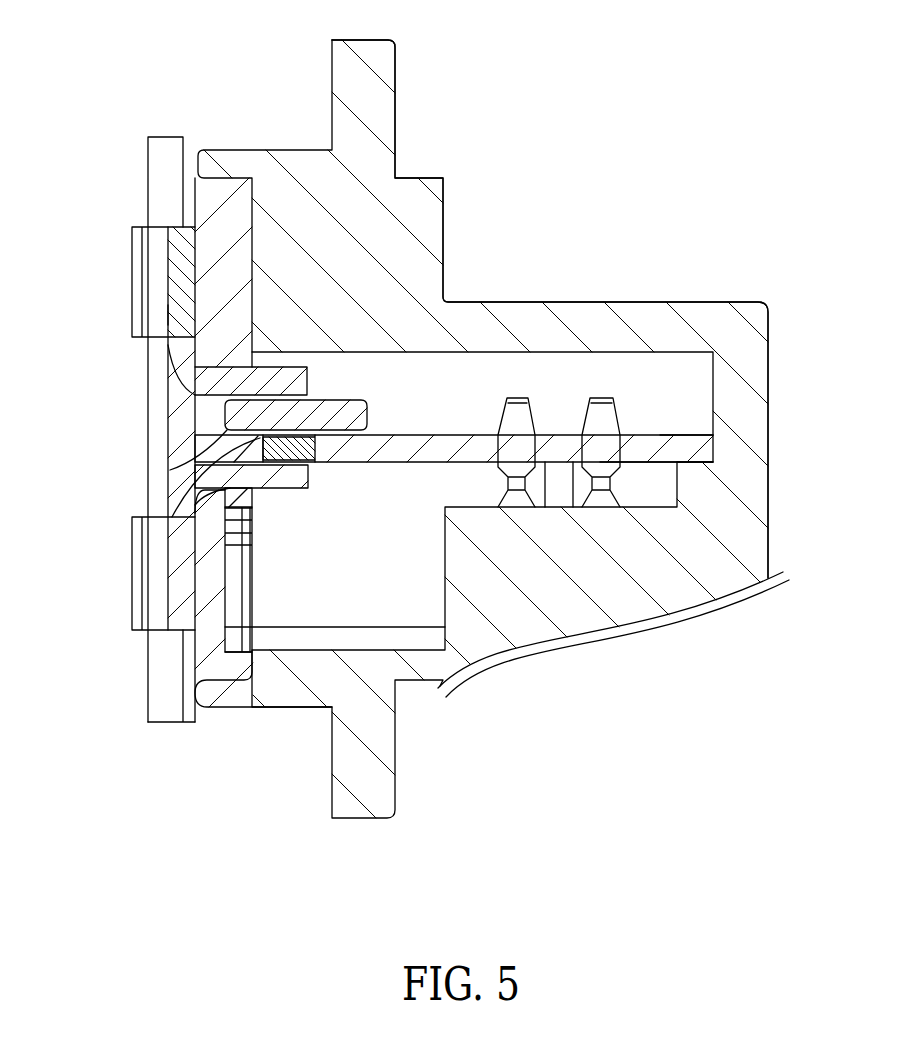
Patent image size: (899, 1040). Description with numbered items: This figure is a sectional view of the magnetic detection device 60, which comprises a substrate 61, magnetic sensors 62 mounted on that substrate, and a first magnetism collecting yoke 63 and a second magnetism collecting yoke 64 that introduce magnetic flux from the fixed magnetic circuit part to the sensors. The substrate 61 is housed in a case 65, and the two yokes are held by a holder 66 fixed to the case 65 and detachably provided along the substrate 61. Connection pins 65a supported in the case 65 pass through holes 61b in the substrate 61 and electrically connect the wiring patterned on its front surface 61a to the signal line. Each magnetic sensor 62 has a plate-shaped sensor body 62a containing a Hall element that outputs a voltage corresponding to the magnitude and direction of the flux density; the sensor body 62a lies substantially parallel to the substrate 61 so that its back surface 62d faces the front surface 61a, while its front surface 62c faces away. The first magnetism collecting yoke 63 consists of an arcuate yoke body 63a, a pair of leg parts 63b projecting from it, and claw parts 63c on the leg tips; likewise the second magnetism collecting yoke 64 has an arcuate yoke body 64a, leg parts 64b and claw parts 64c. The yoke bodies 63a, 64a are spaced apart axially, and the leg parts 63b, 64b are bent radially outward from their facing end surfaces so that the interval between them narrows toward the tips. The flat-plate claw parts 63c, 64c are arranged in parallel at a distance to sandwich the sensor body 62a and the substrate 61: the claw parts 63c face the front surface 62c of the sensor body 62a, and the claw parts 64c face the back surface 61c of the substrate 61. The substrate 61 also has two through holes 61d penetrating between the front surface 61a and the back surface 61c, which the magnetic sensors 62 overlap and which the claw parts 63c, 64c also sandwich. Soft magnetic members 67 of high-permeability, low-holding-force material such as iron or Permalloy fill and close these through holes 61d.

The magnetic detection device 60 is at (667, 115).
The substrate 61 is at (660, 430).
The front surface 61a is at (702, 427).
The holes 61b is at (613, 443).
The back surface 61c is at (703, 463).
The through holes 61d is at (240, 470).
The magnetic sensor 62 is at (355, 395).
The sensor body 62a is at (330, 413).
The front surface 62c is at (190, 384).
The back surface 62d is at (260, 440).
The first magnetism collecting yoke 63 is at (132, 226).
The yoke body 63a is at (183, 282).
The leg parts 63b is at (168, 357).
The claw parts 63c is at (180, 318).
The second magnetism collecting yoke 64 is at (132, 632).
The yoke body 64a is at (183, 580).
The leg parts 64b is at (235, 492).
The claw parts 64c is at (228, 515).
The case 65 is at (283, 173).
The connection pins 65a is at (597, 417).
The holder 66 is at (217, 207).
The soft magnetic members 67 is at (293, 455).